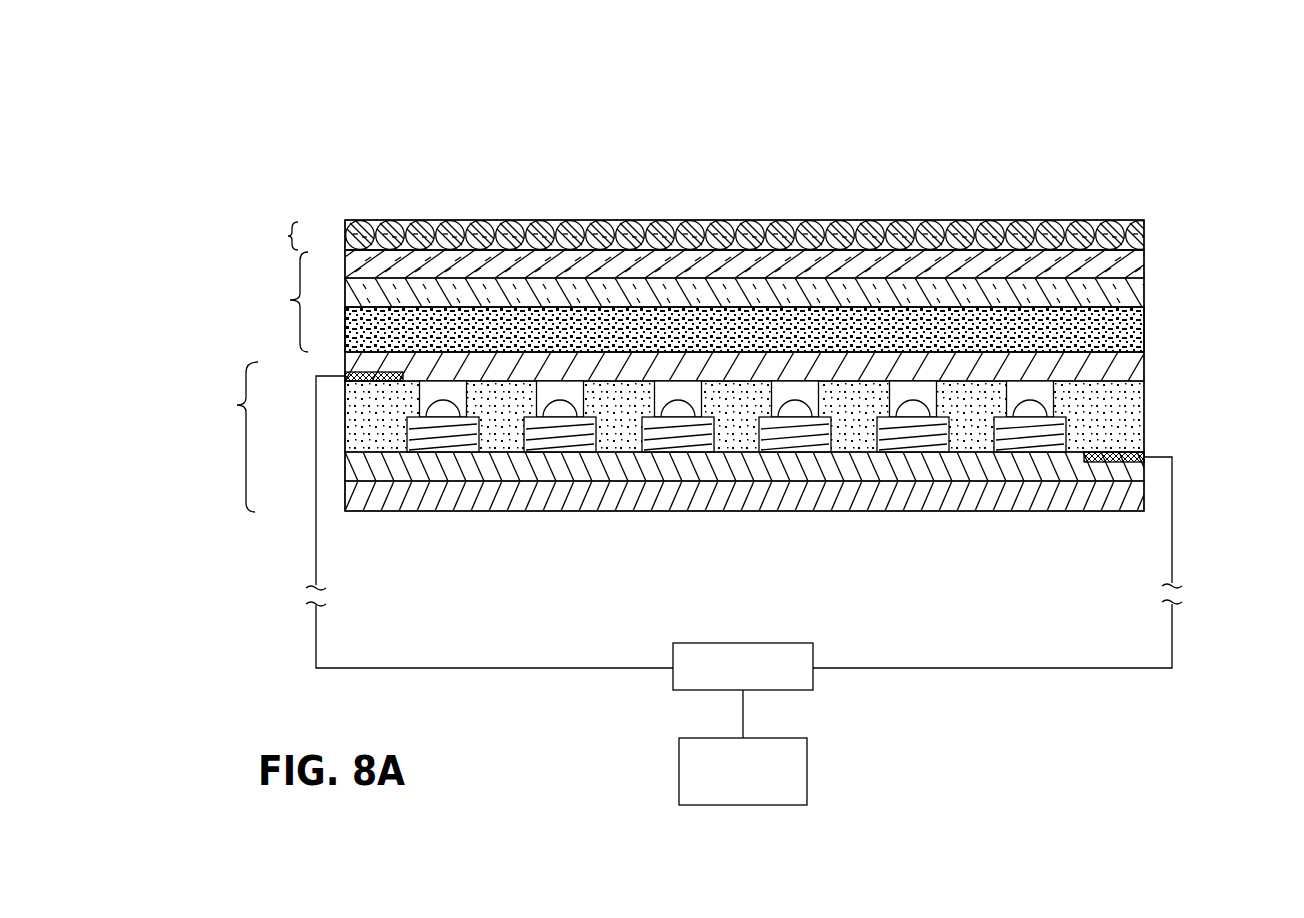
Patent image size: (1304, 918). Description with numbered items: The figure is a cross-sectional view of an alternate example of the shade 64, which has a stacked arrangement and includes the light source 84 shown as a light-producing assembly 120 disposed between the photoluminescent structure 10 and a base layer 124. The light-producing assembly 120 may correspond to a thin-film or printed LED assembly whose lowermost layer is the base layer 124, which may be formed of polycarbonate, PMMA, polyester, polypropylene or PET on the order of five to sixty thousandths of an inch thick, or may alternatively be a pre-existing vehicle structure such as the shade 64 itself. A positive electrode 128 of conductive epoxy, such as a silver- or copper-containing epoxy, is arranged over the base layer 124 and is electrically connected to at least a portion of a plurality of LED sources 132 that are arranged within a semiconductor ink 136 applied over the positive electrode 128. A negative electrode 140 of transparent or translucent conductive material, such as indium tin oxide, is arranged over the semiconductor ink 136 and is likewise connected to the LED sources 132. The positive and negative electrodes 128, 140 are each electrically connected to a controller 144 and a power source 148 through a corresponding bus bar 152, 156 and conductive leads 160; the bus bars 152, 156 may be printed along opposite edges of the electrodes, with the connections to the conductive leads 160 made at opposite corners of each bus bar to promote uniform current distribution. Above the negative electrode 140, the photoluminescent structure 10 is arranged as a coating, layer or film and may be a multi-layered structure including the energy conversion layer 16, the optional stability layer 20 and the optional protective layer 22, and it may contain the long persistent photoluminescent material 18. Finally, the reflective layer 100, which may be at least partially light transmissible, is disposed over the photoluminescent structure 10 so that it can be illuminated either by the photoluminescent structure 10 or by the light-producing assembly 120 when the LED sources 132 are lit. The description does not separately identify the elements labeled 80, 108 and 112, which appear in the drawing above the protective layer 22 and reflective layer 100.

The shade 64 is at (996, 124).
The lens array layer 112 is at (1143, 221).
The reflective layer 100 is at (270, 236).
The outer surface layer 80 is at (1145, 235).
The diffuser layer 108 is at (1146, 250).
The protective layer 22 is at (1145, 265).
The stability layer 20 is at (1145, 295).
The energy conversion layer 16 is at (1145, 323).
The long persistent photoluminescent material 18 is at (1113, 336).
The photoluminescent structure 10 is at (283, 302).
The negative electrode 140 is at (1145, 368).
The semiconductor ink 136 is at (1145, 410).
The LED sources 132 is at (457, 436).
The bus bar 156 is at (345, 376).
The bus bar 152 is at (1147, 451).
The positive electrode 128 is at (1145, 471).
The base layer 124 is at (1140, 500).
The light-producing assembly 120 is at (224, 437).
The light source 84 is at (226, 452).
The conductive leads 160 is at (315, 555).
The controller 144 is at (813, 682).
The power source 148 is at (807, 755).